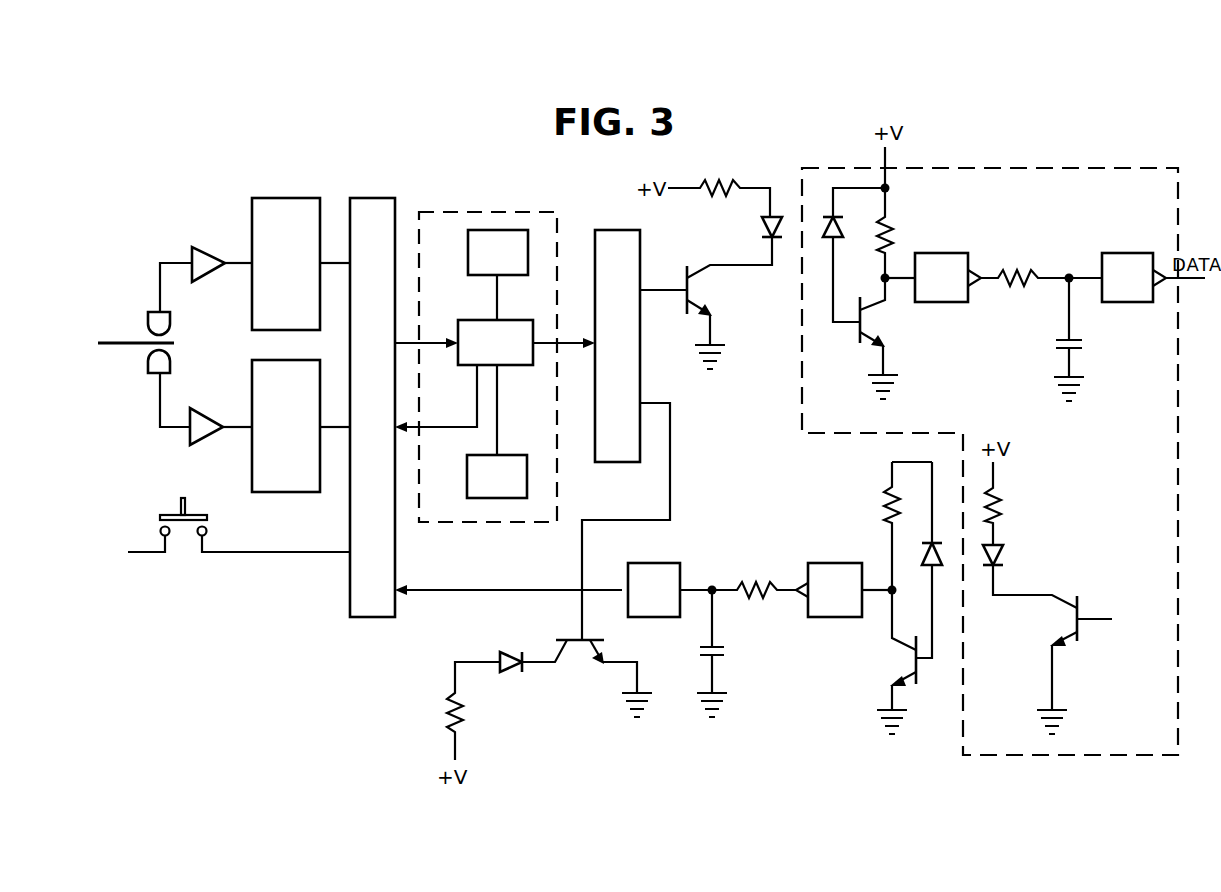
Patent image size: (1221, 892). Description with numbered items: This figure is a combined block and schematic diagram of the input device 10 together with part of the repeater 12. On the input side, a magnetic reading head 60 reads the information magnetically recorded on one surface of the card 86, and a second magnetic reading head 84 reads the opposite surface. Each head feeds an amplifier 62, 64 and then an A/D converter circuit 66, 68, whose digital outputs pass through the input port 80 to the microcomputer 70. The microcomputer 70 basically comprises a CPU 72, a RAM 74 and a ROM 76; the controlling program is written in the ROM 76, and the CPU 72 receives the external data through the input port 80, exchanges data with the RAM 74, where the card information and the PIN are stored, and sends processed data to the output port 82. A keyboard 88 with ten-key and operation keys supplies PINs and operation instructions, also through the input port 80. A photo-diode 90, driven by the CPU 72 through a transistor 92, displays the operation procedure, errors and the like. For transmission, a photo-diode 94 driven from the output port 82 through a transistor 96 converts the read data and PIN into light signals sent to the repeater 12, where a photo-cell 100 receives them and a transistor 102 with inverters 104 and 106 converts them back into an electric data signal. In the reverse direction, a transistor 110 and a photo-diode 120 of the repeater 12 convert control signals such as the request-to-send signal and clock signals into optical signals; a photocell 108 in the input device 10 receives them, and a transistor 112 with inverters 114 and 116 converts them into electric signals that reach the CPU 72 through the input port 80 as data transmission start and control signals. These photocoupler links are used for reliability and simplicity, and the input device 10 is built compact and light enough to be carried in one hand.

The input device 10 is at (388, 178).
The repeater 12 is at (1010, 166).
The magnetic reading head 60 is at (152, 322).
The amplifier 62 is at (210, 251).
The amplifier 64 is at (201, 409).
The A/D converter circuit 66 is at (290, 205).
The A/D converter circuit 68 is at (272, 489).
The microcomputer 70 is at (486, 212).
The CPU 72 is at (506, 366).
The RAM 74 is at (485, 276).
The ROM 76 is at (467, 484).
The input port 80 is at (355, 581).
The output port 82 is at (623, 460).
The magnetic reading head 84 is at (152, 372).
The card 86 is at (130, 345).
The keyboard 88 is at (170, 514).
The photo-diode 90 is at (508, 655).
The transistor 92 is at (576, 637).
The photo-diode 94 is at (760, 228).
The transistor 96 is at (686, 291).
The photo-cell 100 is at (838, 226).
The transistor 102 is at (868, 334).
The inverter 104 is at (935, 255).
The inverter 106 is at (1125, 255).
The photocell 108 is at (926, 555).
The transistor 110 is at (1083, 612).
The transistor 112 is at (906, 665).
The inverter 114 is at (840, 613).
The inverter 116 is at (660, 568).
The photo-diode 120 is at (1001, 553).